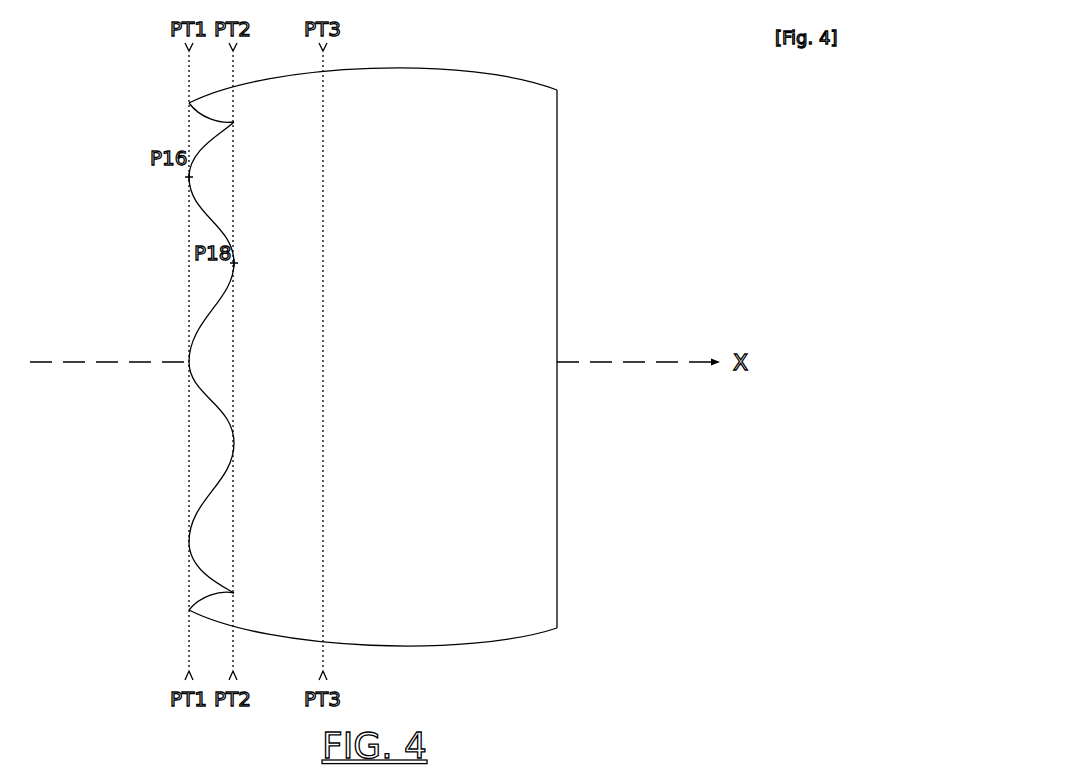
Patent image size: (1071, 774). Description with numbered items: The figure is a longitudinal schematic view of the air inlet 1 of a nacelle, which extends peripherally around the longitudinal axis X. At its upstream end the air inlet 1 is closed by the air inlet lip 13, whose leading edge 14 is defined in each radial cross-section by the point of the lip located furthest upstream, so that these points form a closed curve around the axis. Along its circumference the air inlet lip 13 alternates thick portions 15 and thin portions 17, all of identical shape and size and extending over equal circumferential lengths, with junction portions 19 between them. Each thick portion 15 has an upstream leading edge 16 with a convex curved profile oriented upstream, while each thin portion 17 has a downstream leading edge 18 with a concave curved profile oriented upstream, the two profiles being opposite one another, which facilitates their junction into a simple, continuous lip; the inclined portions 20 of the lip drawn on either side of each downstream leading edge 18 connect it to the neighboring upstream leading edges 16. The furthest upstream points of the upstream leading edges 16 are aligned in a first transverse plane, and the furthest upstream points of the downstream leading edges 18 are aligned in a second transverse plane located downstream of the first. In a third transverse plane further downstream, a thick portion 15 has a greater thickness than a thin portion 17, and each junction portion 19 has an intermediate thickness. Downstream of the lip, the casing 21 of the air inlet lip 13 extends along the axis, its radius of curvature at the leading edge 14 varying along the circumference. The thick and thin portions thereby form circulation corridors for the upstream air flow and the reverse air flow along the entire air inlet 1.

The air inlet 1 is at (594, 134).
The air inlet lip 13 is at (88, 103).
The leading edge 14 is at (200, 441).
The thick portion 15 is at (211, 154).
The upstream leading edge 16 is at (170, 176).
The thin portion 17 is at (239, 302).
The downstream leading edge 18 is at (213, 269).
The junction portion 19 is at (247, 213).
The inclined portion 20 is at (205, 217).
The casing 21 is at (373, 368).